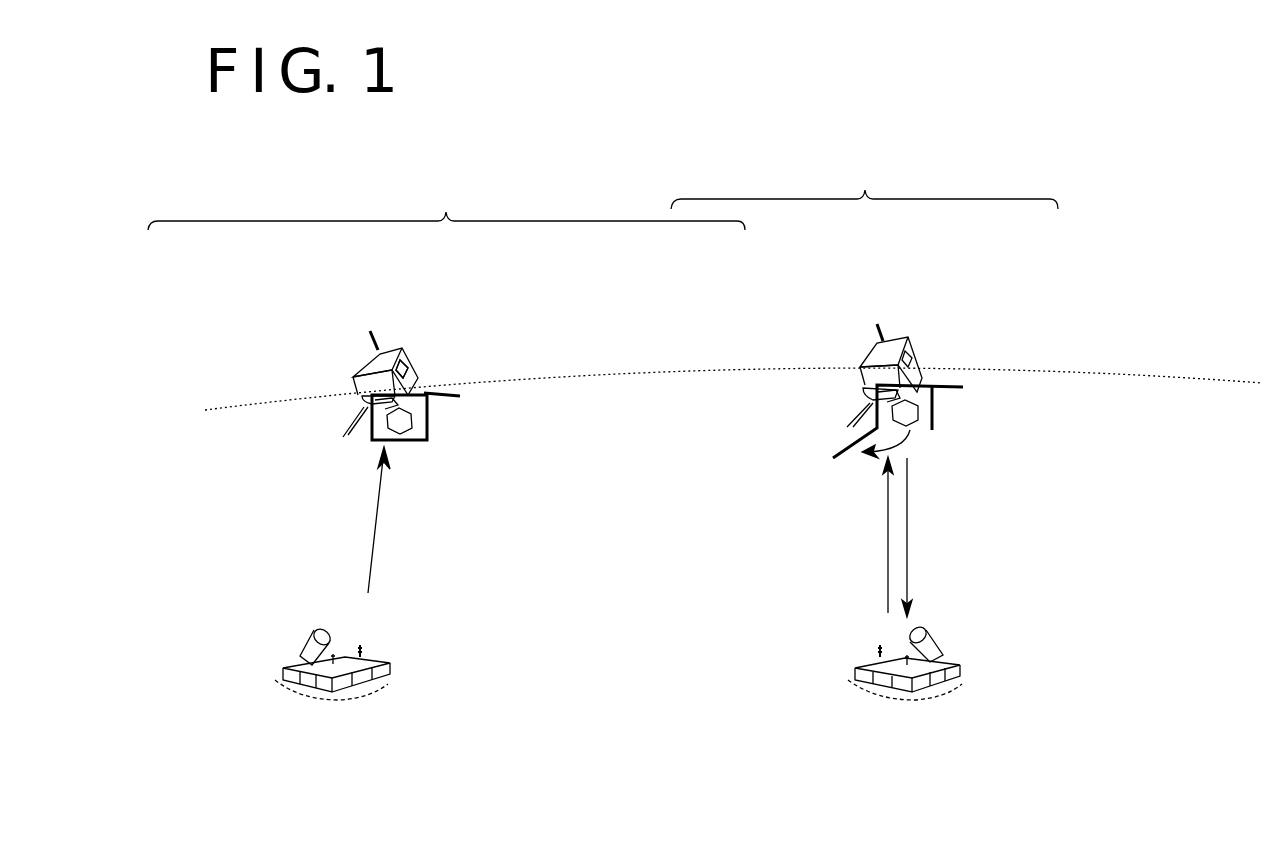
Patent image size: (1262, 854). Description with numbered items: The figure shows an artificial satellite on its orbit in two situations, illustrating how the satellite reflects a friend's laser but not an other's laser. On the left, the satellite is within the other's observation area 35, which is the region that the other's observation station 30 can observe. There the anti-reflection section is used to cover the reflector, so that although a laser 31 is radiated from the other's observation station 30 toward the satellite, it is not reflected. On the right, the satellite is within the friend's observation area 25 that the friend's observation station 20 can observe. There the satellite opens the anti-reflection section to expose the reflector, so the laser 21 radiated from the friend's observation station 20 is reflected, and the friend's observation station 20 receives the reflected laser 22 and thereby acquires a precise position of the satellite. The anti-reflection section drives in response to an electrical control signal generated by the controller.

The friend's observation station 20 is at (912, 695).
The laser 21 is at (886, 548).
The reflected laser 22 is at (909, 545).
The friend's observation area 25 is at (864, 179).
The other's observation station 30 is at (328, 697).
The laser 31 is at (380, 525).
The other's observation area 35 is at (446, 201).